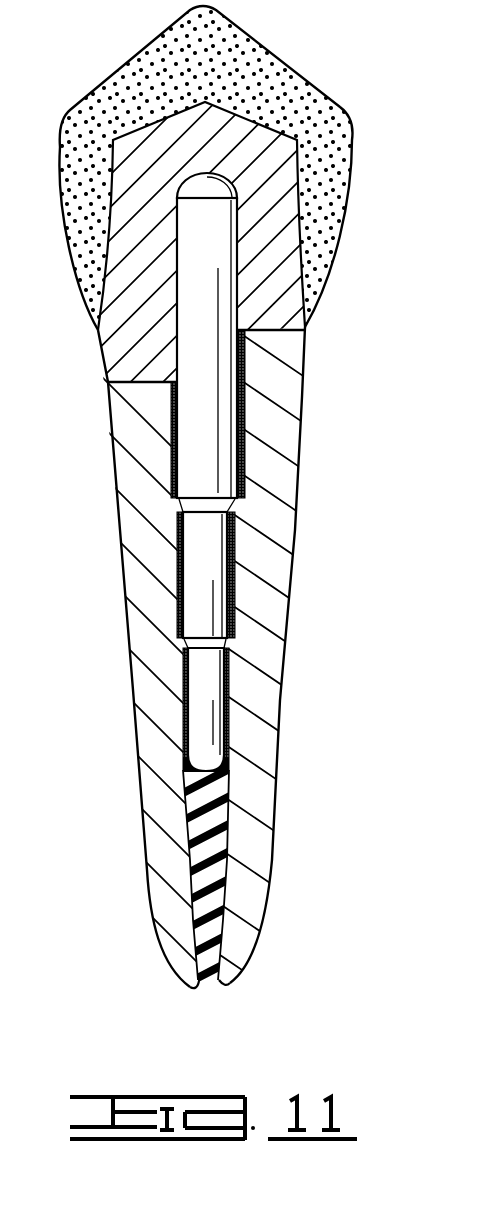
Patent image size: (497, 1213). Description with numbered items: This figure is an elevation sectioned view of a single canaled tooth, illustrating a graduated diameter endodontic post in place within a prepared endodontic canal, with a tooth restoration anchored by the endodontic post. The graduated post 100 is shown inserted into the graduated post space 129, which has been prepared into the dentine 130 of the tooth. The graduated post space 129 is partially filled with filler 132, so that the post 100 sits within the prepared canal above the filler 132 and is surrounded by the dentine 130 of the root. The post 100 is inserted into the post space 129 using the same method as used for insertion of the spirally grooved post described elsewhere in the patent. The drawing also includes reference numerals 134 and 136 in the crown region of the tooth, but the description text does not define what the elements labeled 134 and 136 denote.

The graduated post 100 is at (212, 390).
The graduated post space 129 is at (243, 468).
The dentine 130 is at (155, 597).
The filler 132 is at (204, 986).
The crown dentin 134 is at (135, 336).
The crown 136 is at (242, 75).